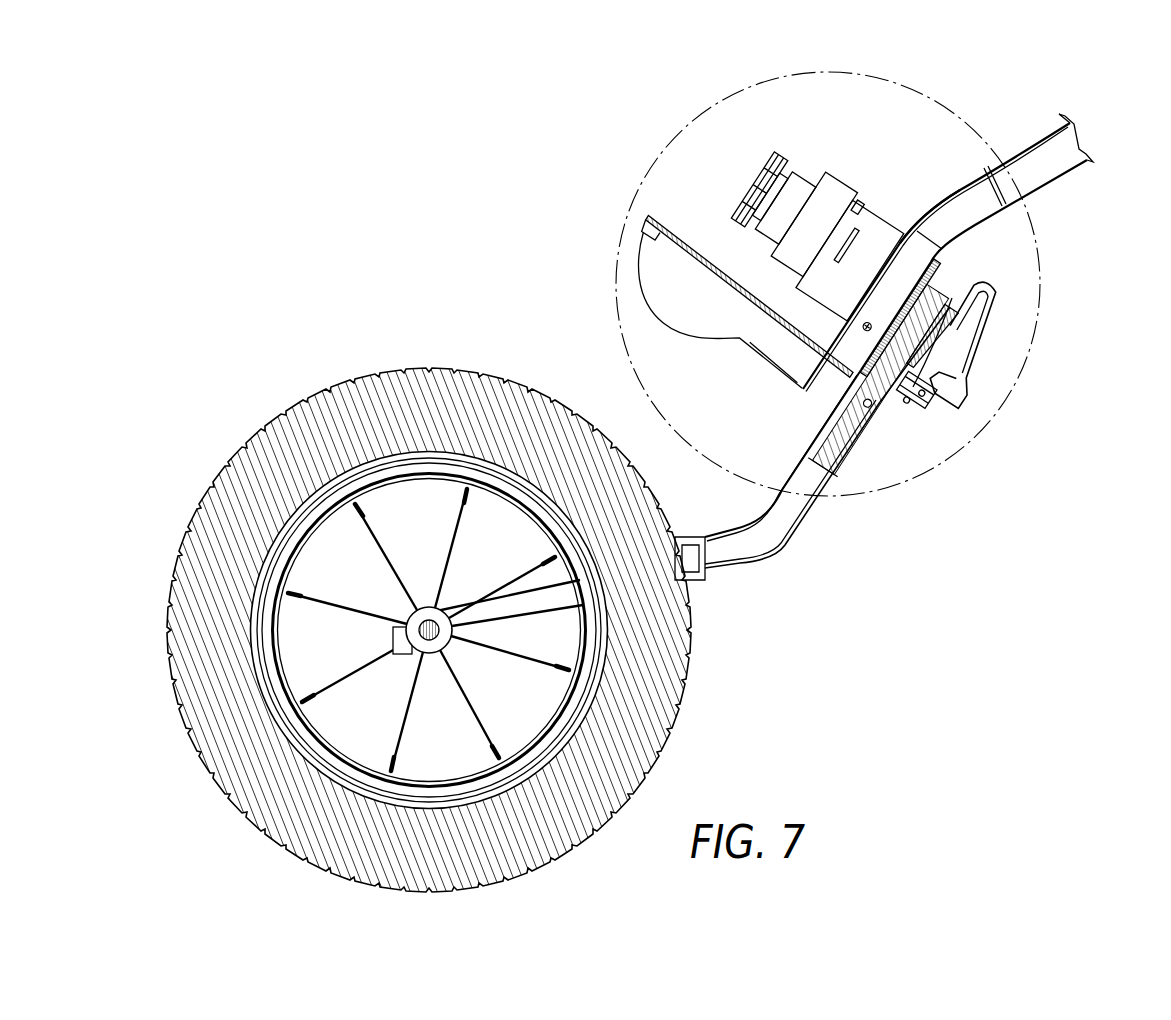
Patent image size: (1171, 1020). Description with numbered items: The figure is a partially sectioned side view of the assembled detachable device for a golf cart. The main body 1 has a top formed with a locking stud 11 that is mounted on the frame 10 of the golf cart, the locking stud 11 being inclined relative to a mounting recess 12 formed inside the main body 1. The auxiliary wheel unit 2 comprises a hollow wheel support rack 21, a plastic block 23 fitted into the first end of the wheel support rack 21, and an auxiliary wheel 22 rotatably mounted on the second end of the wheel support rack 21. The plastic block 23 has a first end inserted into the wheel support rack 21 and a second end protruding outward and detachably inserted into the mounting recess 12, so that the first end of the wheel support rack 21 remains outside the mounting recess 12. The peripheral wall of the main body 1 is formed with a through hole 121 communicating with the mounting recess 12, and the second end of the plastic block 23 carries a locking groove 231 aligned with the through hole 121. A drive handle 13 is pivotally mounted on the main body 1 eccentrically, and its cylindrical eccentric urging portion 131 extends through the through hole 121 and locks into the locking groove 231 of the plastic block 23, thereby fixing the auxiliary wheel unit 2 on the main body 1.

The main body 1 is at (1017, 256).
The frame 10 is at (1030, 160).
The locking stud 11 is at (900, 253).
The mounting recess 12 is at (955, 347).
The drive handle 13 is at (990, 313).
The through hole 121 is at (925, 401).
The eccentric urging portion 131 is at (933, 405).
The locking groove 231 is at (1010, 431).
The auxiliary wheel unit 2 is at (442, 306).
The wheel support rack 21 is at (778, 523).
The auxiliary wheel 22 is at (352, 385).
The plastic block 23 is at (857, 452).